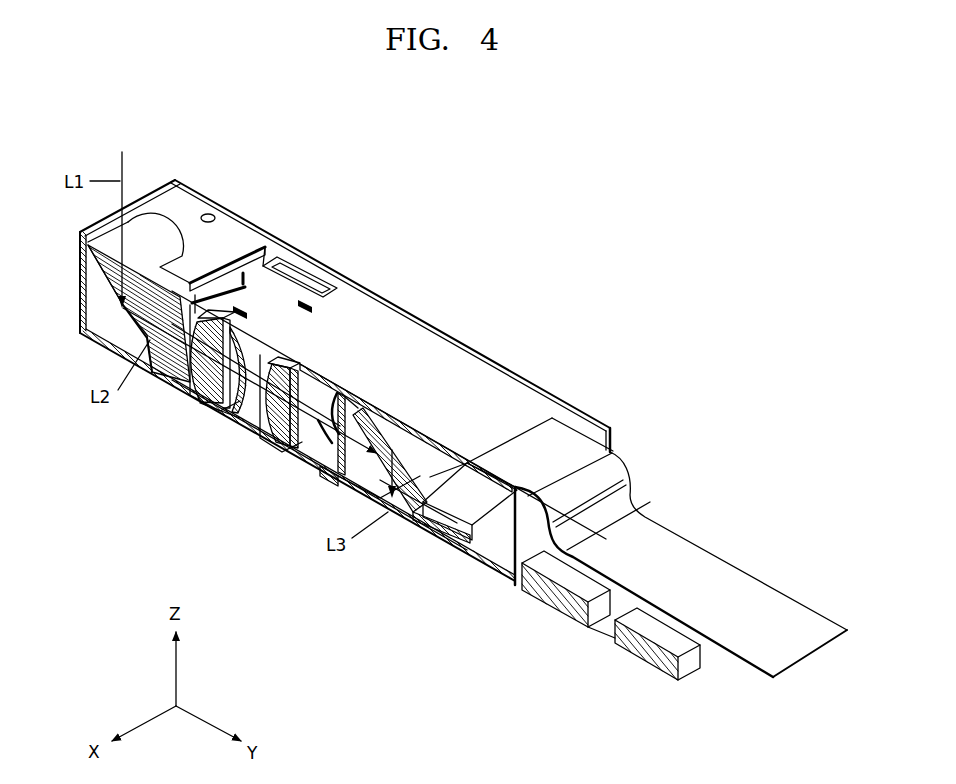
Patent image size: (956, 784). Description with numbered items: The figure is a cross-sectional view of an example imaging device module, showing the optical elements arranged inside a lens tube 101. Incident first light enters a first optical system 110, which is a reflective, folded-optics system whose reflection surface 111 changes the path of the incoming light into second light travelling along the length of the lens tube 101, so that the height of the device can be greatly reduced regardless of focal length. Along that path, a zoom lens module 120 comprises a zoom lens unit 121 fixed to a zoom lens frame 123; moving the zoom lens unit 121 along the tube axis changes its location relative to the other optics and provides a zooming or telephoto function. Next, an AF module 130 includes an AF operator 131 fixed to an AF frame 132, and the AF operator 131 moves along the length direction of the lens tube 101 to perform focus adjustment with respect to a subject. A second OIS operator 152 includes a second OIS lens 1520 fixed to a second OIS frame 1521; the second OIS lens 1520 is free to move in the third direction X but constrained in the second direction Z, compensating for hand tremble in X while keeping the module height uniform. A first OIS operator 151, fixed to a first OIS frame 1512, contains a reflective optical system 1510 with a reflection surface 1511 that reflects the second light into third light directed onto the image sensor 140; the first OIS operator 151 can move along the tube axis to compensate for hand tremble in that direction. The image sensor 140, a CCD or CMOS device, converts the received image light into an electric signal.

The lens tube 101 is at (503, 382).
The first optical system 110 is at (110, 276).
The reflection surface 111 is at (122, 307).
The zoom lens module 120 is at (189, 391).
The zoom lens unit 121 is at (193, 387).
The zoom lens frame 123 is at (199, 413).
The AF module 130 is at (282, 442).
The AF operator 131 is at (272, 441).
The AF frame 132 is at (300, 455).
The image sensor 140 is at (414, 533).
The first OIS operator 151 is at (395, 454).
The reflective optical system 1510 is at (402, 507).
The reflection surface 1511 is at (363, 412).
The first OIS frame 1512 is at (387, 414).
The second OIS operator 152 is at (248, 318).
The second OIS lens 1520 is at (263, 343).
The second OIS frame 1521 is at (230, 308).